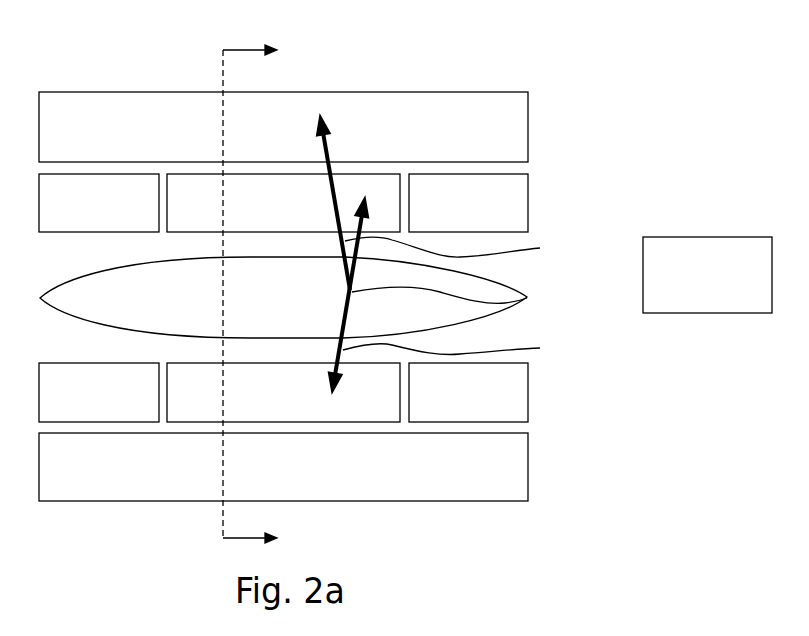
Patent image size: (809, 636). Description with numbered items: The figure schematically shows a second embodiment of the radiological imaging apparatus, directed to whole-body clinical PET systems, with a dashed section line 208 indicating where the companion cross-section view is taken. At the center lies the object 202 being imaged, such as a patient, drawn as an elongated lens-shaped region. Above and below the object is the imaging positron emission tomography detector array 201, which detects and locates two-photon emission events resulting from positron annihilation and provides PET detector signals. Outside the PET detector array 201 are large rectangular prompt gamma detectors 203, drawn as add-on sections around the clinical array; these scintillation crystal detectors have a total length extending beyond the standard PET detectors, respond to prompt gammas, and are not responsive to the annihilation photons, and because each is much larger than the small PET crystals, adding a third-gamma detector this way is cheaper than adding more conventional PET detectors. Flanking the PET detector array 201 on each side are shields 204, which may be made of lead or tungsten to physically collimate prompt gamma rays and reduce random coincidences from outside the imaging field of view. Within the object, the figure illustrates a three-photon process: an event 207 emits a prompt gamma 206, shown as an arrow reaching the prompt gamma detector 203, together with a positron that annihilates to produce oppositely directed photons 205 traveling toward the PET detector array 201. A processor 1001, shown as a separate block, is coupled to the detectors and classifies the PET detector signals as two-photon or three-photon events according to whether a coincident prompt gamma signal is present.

The imaging positron emitting tomography (PET) detector array 201 is at (257, 221).
The object being imaged 202 is at (131, 312).
The prompt gamma detector 203 is at (75, 139).
The shielding 204 is at (75, 221).
The oppositely directed photons 205 is at (469, 298).
The prompt gamma 206 is at (327, 137).
The event 207 is at (530, 301).
The line 208 is at (223, 72).
The processor 1001 is at (677, 291).